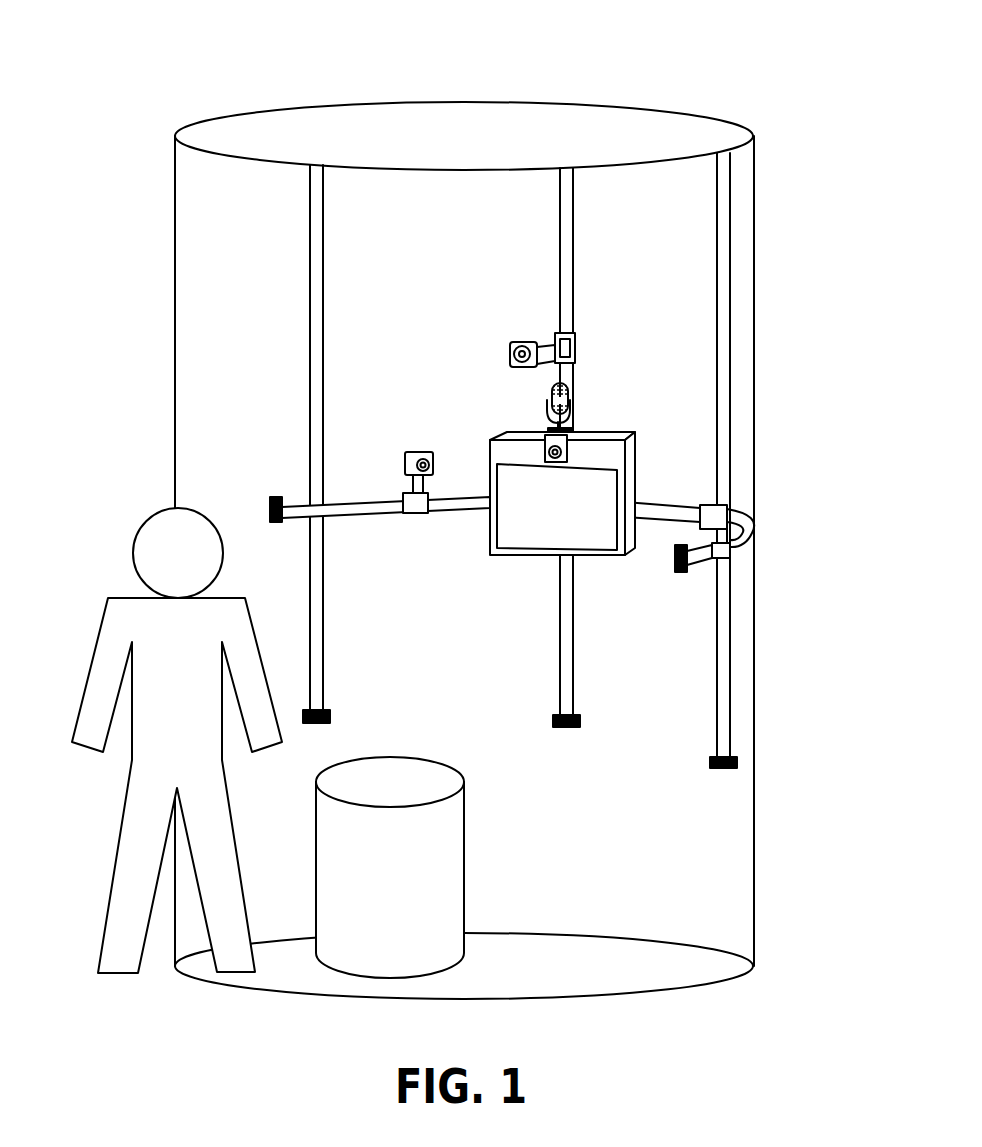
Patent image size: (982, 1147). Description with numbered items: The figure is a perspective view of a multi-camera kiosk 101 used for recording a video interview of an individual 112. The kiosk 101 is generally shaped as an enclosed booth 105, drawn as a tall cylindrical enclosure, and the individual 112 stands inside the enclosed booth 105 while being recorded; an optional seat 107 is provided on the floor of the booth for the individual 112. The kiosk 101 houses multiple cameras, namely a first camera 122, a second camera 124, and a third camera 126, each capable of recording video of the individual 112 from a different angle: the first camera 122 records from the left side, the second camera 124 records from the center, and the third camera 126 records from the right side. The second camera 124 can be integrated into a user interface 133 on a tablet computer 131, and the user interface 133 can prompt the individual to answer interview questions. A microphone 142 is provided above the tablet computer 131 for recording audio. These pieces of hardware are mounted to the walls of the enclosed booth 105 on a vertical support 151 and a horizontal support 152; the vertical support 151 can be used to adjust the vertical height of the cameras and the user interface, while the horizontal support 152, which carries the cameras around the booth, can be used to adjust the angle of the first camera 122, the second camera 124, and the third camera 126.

The kiosk 101 is at (650, 76).
The enclosed booth 105 is at (757, 243).
The seat 107 is at (467, 815).
The individual 112 is at (100, 632).
The first camera 122 is at (423, 452).
The second camera 124 is at (565, 453).
The third camera 126 is at (710, 508).
The tablet computer 131 is at (559, 525).
The user interface 133 is at (588, 540).
The microphone 142 is at (570, 395).
The vertical support 151 is at (318, 323).
The horizontal support 152 is at (338, 508).